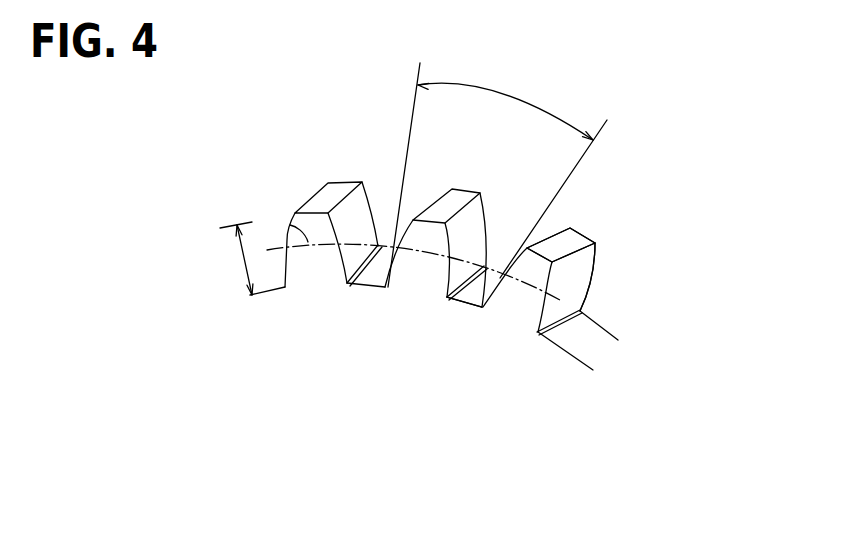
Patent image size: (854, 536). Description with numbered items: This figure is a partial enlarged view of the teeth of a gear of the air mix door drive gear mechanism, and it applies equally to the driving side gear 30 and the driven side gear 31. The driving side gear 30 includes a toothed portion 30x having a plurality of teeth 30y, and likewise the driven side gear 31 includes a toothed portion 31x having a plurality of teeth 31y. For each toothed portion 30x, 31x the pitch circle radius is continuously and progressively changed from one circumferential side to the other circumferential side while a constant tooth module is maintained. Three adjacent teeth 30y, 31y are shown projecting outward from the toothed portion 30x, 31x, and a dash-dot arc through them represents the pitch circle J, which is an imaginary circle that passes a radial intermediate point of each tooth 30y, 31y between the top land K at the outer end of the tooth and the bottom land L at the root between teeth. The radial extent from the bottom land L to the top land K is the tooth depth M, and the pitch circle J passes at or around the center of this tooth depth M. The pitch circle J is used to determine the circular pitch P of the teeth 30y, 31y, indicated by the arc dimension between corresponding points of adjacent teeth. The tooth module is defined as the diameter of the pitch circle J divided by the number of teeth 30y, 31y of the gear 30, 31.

The driving side gear 30 is at (497, 291).
The driven side gear 31 is at (497, 291).
The toothed portion 30x is at (662, 280).
The toothed portion 31x is at (589, 293).
The teeth 30y is at (506, 236).
The teeth 31y is at (378, 210).
The pitch circle J is at (285, 222).
The top land K is at (572, 238).
The bottom land L is at (472, 292).
The tooth depth M is at (243, 258).
The circular pitch P is at (497, 175).